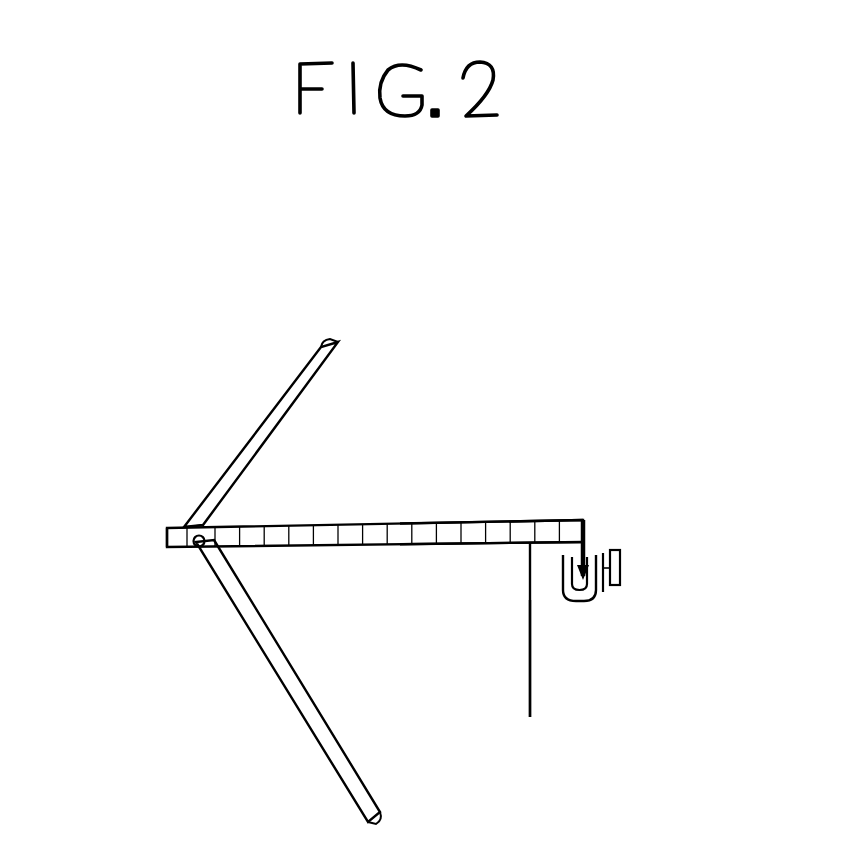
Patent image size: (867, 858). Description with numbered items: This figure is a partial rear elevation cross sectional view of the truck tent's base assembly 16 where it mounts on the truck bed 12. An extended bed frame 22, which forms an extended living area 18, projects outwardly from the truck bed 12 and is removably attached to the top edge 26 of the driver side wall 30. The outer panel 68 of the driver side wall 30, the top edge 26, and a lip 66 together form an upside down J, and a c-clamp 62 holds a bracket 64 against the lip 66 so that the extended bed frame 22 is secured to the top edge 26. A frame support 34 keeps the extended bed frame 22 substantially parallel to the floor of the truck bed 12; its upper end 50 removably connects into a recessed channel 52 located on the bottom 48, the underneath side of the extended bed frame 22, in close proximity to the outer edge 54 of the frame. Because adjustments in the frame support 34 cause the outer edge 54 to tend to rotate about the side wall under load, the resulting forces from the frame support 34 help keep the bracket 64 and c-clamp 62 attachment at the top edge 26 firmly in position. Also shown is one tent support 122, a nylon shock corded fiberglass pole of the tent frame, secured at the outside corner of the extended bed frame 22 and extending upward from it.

The truck bed 12 is at (768, 697).
The base assembly 16 is at (532, 429).
The extended living area 18 is at (375, 521).
The extended bed frame 22 is at (527, 520).
The top edge 26 is at (548, 546).
The driver side wall 30 is at (643, 626).
The frame support 34 is at (317, 747).
The bottom 48 is at (308, 548).
The upper end 50 is at (213, 582).
The recessed channel 52 is at (185, 537).
The outer edge 54 is at (191, 497).
The c-clamp 62 is at (652, 557).
The bracket 64 is at (587, 532).
The lip 66 is at (561, 603).
The outer panel 68 is at (527, 657).
The tent support 122 is at (311, 385).